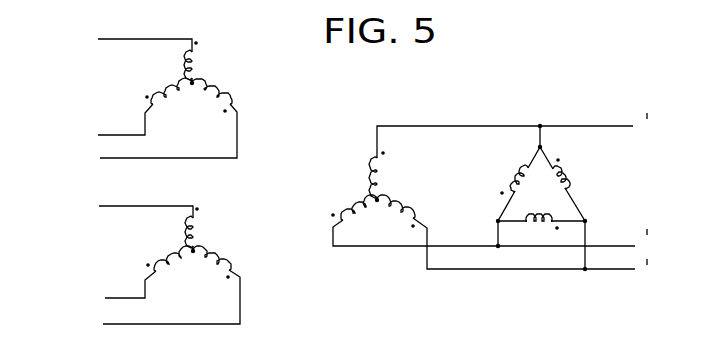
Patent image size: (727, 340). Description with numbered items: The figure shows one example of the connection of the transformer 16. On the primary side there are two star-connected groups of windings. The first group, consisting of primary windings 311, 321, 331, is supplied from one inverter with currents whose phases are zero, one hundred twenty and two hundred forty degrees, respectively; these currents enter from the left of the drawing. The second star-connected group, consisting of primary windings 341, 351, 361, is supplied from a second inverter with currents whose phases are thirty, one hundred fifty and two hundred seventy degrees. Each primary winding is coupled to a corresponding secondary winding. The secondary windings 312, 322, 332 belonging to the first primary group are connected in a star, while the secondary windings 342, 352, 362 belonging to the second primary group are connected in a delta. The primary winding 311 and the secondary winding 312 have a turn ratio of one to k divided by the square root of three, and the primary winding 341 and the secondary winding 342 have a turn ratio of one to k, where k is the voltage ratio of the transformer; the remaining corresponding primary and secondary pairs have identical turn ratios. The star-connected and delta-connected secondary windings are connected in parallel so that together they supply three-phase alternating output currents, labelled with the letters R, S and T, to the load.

The transformer 16 is at (355, 90).
The primary winding 311 is at (197, 62).
The primary winding 321 is at (175, 86).
The primary winding 331 is at (228, 99).
The primary winding 341 is at (197, 226).
The primary winding 351 is at (175, 253).
The primary winding 361 is at (228, 263).
The secondary winding 312 is at (383, 170).
The secondary winding 322 is at (360, 202).
The secondary winding 332 is at (410, 205).
The secondary winding 342 is at (568, 178).
The secondary winding 352 is at (524, 167).
The secondary winding 362 is at (553, 218).